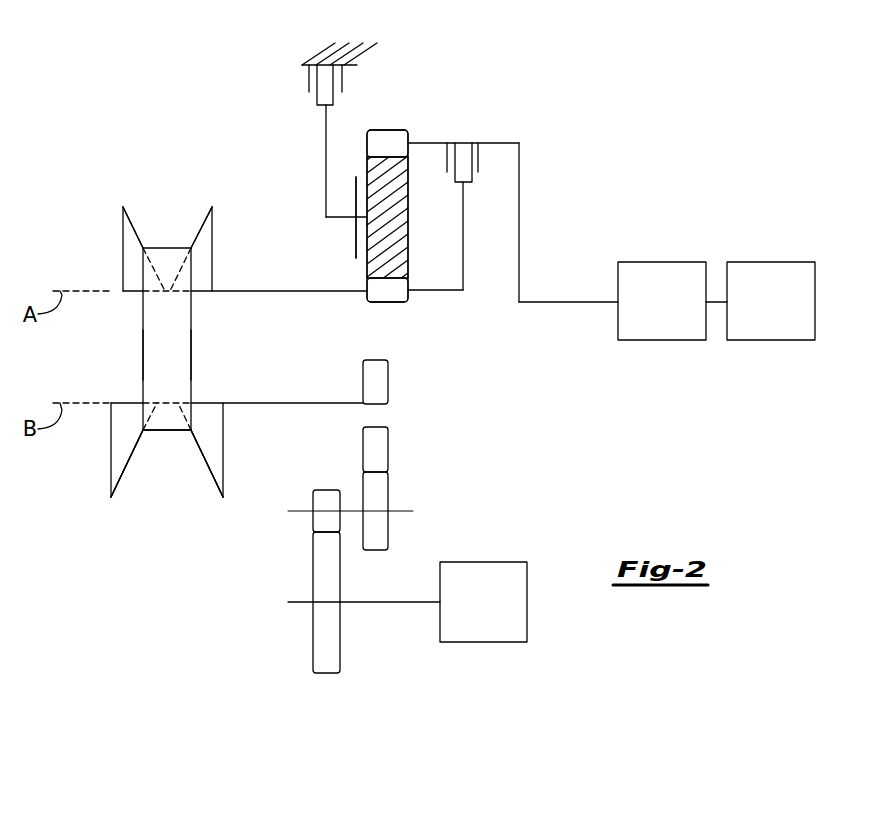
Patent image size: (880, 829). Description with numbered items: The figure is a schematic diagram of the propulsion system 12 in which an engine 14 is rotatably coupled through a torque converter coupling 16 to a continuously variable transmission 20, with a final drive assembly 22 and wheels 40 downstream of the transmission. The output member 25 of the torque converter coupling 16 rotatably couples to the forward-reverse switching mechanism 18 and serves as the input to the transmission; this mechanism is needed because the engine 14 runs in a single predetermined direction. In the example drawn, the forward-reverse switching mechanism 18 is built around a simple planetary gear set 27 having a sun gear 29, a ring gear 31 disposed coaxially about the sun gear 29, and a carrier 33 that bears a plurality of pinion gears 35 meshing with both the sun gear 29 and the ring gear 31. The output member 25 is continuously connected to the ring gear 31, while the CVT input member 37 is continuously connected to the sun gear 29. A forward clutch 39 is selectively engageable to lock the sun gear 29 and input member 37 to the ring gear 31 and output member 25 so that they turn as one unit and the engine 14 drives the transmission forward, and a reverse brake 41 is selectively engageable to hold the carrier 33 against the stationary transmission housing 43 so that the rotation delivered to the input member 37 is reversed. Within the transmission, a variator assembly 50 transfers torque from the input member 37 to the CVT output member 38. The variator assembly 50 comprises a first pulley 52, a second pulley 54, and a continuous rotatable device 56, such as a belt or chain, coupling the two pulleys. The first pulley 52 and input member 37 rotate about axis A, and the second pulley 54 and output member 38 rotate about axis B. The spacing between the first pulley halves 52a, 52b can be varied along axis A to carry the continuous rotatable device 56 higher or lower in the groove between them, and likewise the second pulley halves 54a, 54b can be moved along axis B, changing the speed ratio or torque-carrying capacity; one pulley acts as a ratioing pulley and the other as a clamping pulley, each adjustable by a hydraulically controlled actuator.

The propulsion system 12 is at (608, 114).
The engine 14 is at (759, 313).
The torque converter coupling 16 is at (650, 313).
The forward-reverse switching mechanism 18 is at (409, 117).
The continuously variable transmission 20 is at (99, 428).
The final drive assembly 22 is at (418, 463).
The output member 25 is at (569, 302).
The simple planetary gear set 27 is at (350, 243).
The sun gear 29 is at (378, 302).
The ring gear 31 is at (378, 156).
The carrier 33 is at (356, 178).
The pinion gears 35 is at (398, 193).
The CVT input member 37 is at (300, 291).
The CVT output member 38 is at (288, 403).
The forward clutch 39 is at (471, 139).
The wheels 40 is at (472, 613).
The reverse brake 41 is at (303, 80).
The transmission housing 43 is at (340, 55).
The variator assembly 50 is at (122, 348).
The first pulley 52 is at (97, 251).
The first pulley half 52a is at (132, 245).
The first pulley half 52b is at (204, 245).
The second pulley 54 is at (165, 491).
The second pulley half 54a is at (120, 463).
The second pulley half 54b is at (213, 463).
The continuous rotatable device 56 is at (175, 357).